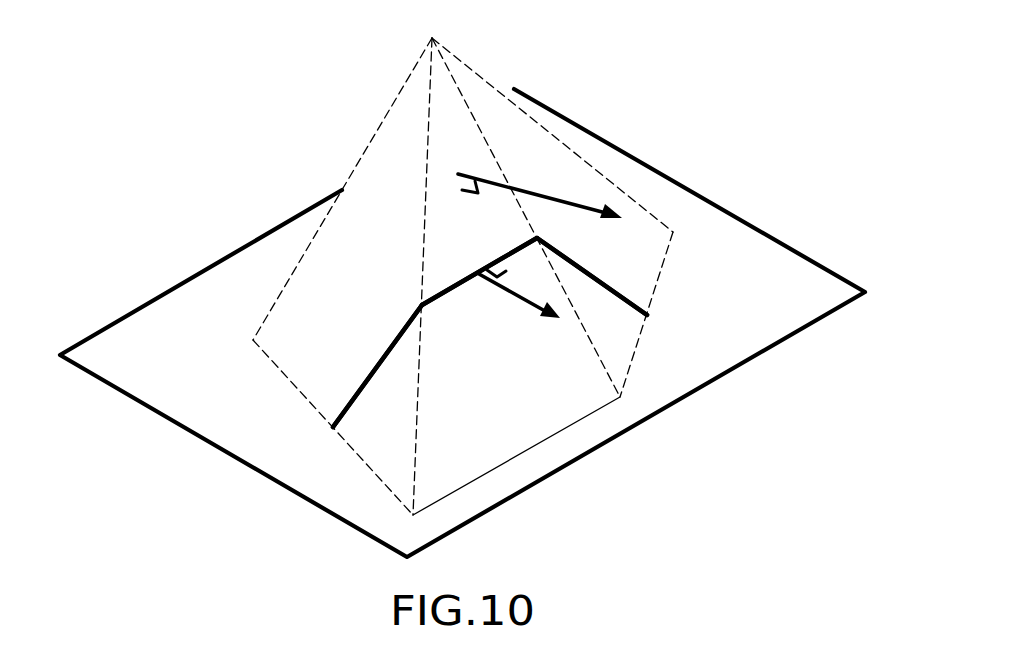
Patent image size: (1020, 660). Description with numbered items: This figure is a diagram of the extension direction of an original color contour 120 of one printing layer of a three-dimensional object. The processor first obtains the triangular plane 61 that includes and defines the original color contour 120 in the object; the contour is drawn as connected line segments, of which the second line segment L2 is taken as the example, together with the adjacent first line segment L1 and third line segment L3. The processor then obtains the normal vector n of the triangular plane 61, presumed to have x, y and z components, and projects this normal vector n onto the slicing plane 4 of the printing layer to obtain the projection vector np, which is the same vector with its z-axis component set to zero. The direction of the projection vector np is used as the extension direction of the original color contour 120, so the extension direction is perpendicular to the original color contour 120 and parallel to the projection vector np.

The slicing plane 4 is at (732, 255).
The triangular plane 61 is at (436, 107).
The original color contour 120 is at (442, 277).
The first line segment L1 is at (610, 289).
The second line segment L2 is at (463, 273).
The third line segment L3 is at (367, 377).
The normal vector n is at (583, 207).
The projection vector np is at (527, 295).